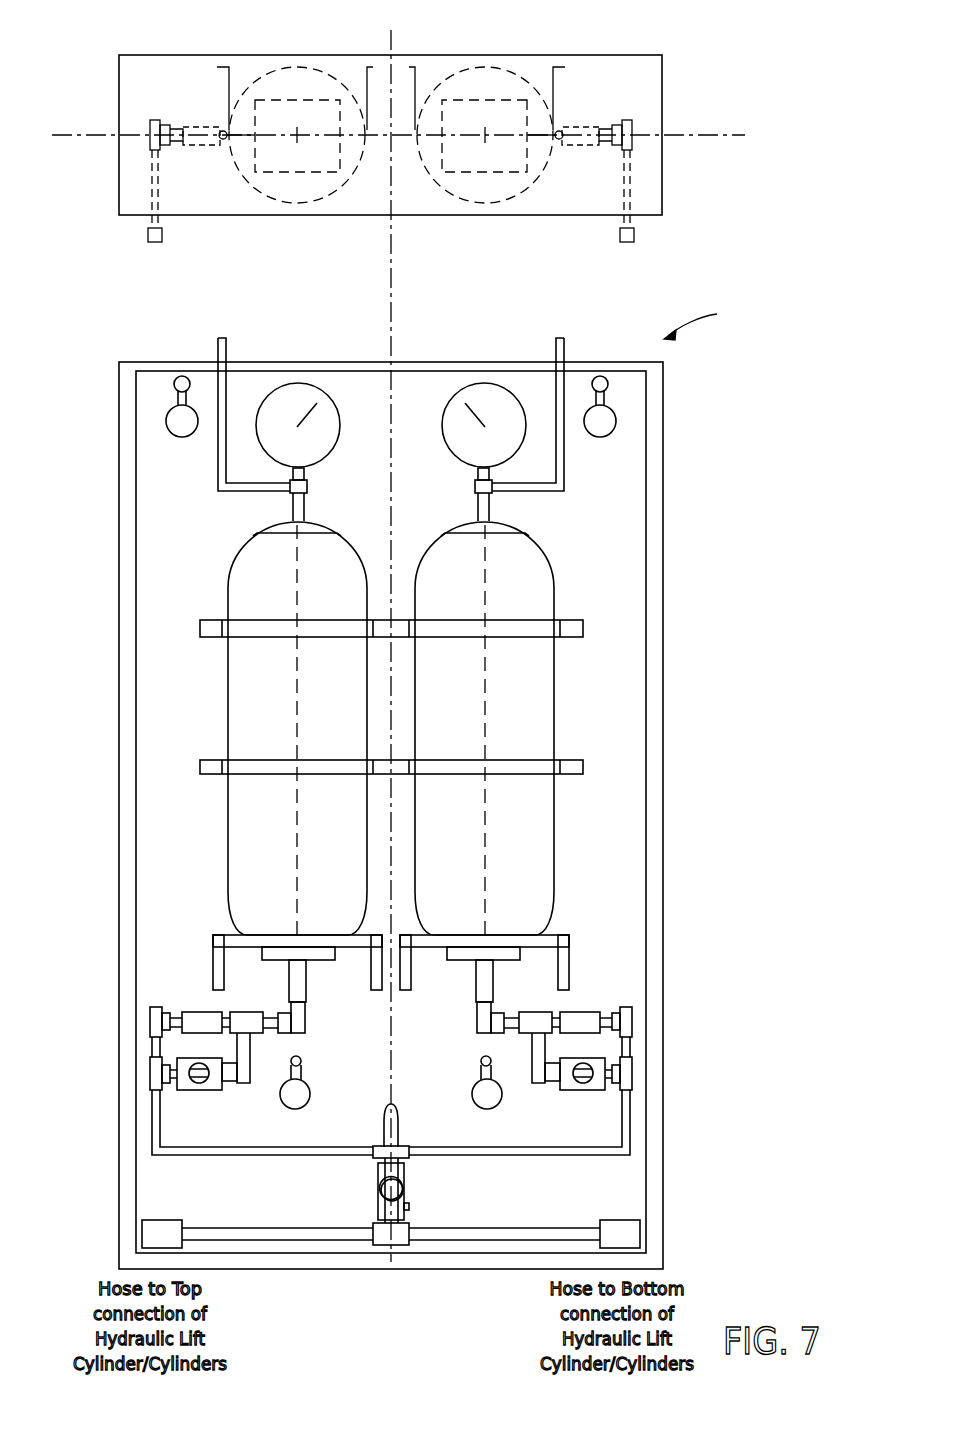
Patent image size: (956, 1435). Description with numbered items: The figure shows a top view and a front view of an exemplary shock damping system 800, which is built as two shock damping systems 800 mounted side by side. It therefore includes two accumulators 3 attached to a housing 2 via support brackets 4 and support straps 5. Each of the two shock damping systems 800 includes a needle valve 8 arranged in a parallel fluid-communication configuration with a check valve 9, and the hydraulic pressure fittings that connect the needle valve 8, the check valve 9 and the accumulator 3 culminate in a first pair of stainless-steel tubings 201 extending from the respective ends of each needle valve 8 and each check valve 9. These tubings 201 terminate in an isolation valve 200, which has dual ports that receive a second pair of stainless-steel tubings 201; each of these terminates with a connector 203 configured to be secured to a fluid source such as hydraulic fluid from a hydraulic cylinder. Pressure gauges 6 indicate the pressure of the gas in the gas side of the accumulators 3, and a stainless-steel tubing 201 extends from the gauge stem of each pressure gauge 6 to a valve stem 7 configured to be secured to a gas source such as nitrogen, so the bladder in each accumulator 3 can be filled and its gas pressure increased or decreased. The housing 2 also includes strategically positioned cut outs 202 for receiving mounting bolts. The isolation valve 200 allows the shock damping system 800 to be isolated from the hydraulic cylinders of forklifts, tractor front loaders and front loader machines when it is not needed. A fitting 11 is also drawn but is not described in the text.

The housing 2 is at (663, 84).
The accumulator 3 is at (306, 80).
The support bracket 4 is at (550, 940).
The support strap 5 is at (252, 628).
The pressure gauge 6 is at (322, 153).
The valve stem 7 is at (221, 139).
The needle valve 8 is at (185, 1082).
The check valve 9 is at (190, 1022).
The hose fitting 11 is at (148, 236).
The isolation valve 200 is at (409, 1205).
The stainless-steel tubing 201 is at (218, 473).
The cut out 202 is at (176, 434).
The connector 203 is at (163, 1233).
The shock damping system 800 is at (686, 236).